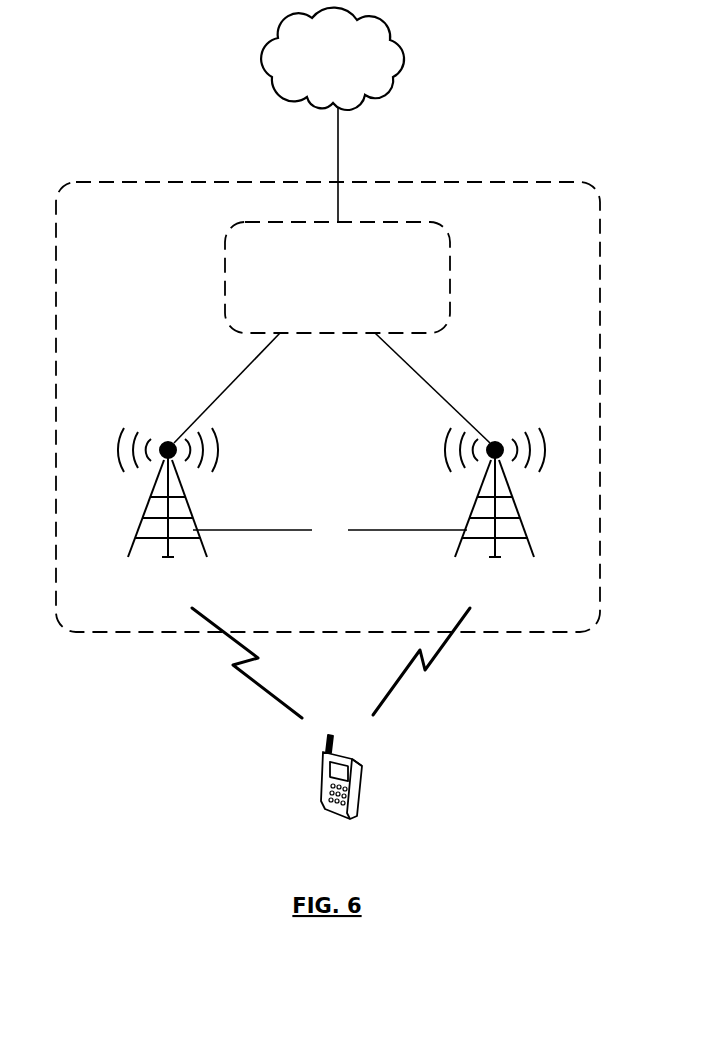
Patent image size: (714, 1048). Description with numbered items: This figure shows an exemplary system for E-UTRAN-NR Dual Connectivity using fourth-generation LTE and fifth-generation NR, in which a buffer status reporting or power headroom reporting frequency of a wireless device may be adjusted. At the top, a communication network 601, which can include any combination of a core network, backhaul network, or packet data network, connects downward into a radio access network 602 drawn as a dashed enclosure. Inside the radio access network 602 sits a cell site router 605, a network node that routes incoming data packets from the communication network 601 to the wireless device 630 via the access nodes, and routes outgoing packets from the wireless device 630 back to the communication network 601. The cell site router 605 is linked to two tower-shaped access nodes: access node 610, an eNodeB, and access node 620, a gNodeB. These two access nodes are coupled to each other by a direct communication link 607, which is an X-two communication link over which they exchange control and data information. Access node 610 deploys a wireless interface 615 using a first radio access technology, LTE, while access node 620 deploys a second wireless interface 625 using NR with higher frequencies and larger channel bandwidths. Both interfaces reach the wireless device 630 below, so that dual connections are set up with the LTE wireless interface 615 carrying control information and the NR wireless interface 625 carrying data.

The communication network 601 is at (332, 59).
The radio access network 602 is at (130, 182).
The cell site router 605 is at (337, 277).
The direct communication link 607 is at (393, 530).
The access node 610 is at (150, 523).
The wireless interface 615 is at (252, 678).
The access node 620 is at (515, 522).
The second wireless interface 625 is at (433, 668).
The wireless device 630 is at (327, 807).